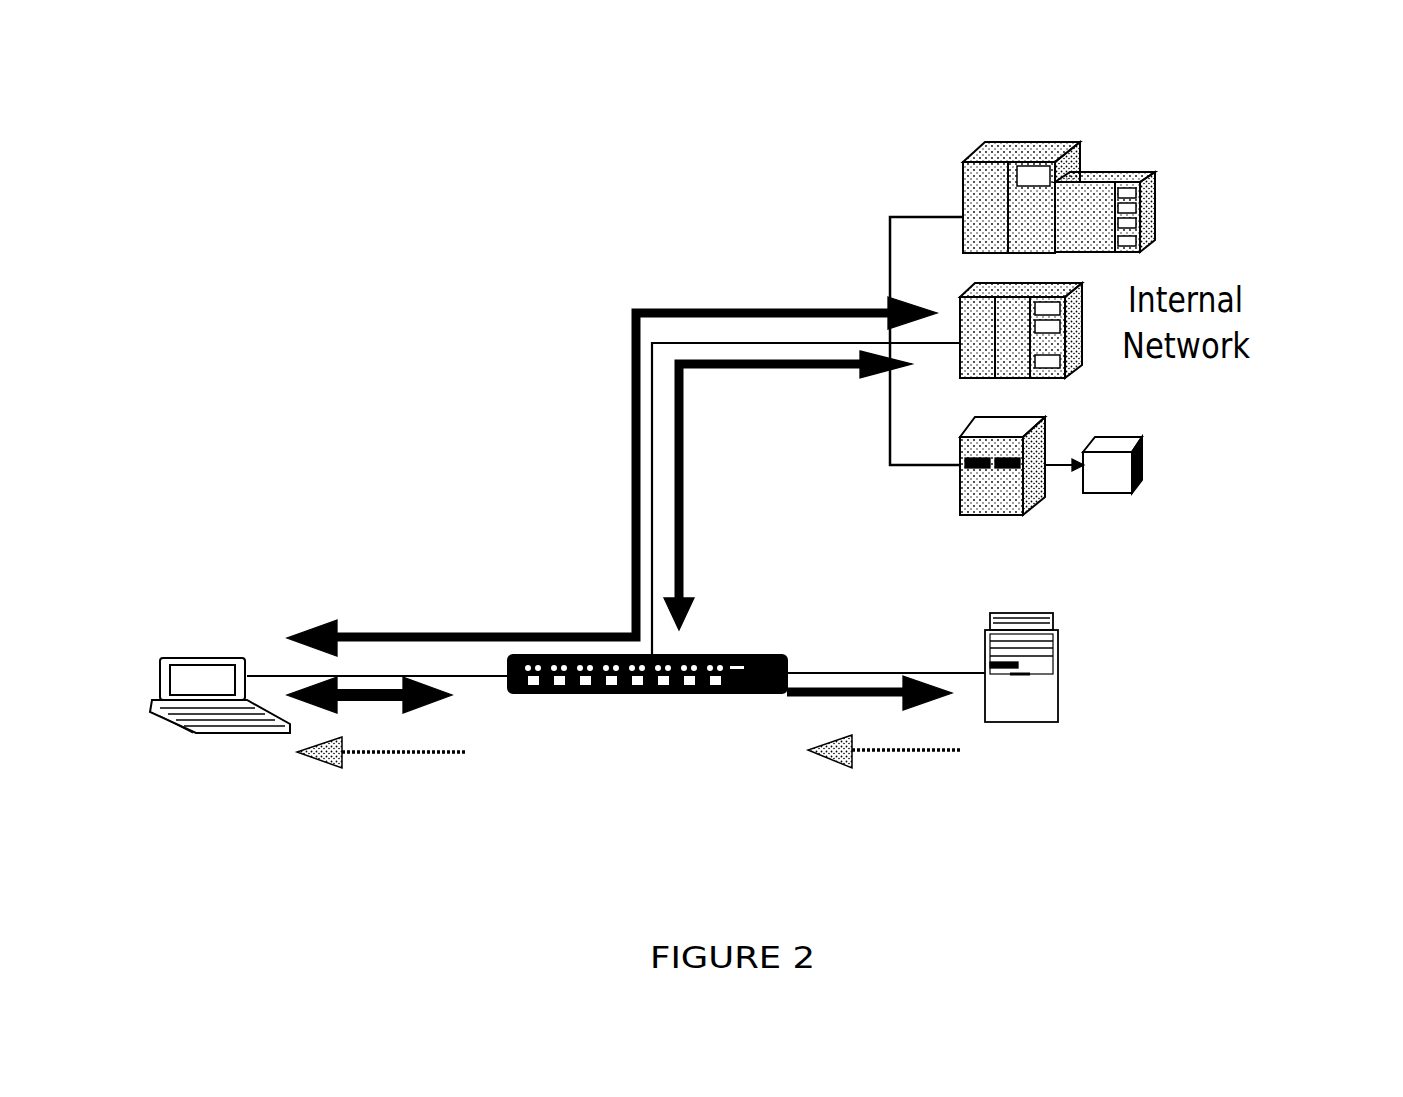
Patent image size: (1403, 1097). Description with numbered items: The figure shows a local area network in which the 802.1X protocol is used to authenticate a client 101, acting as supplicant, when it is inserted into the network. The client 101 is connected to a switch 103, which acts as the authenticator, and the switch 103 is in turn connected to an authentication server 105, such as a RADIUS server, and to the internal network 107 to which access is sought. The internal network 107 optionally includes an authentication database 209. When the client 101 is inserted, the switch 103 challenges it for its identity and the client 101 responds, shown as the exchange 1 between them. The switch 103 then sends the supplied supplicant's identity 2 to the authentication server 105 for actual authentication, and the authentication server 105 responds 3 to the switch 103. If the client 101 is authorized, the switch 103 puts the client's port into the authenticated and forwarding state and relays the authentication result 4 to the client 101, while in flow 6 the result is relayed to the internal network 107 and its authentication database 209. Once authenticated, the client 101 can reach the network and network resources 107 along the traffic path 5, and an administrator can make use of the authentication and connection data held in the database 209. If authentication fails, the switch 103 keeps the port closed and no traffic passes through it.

The client 101 is at (215, 655).
The switch 103 is at (740, 655).
The authentication server 105 is at (1013, 613).
The internal network 107 is at (1155, 193).
The authentication database 209 is at (1145, 462).
The identity challenge and response 1 is at (369, 703).
The supplied supplicant's identity 2 is at (869, 705).
The authentication response 3 is at (885, 762).
The authentication result 4 is at (381, 763).
The client network traffic path 5 is at (612, 476).
The authentication result flow to internal network 6 is at (788, 490).